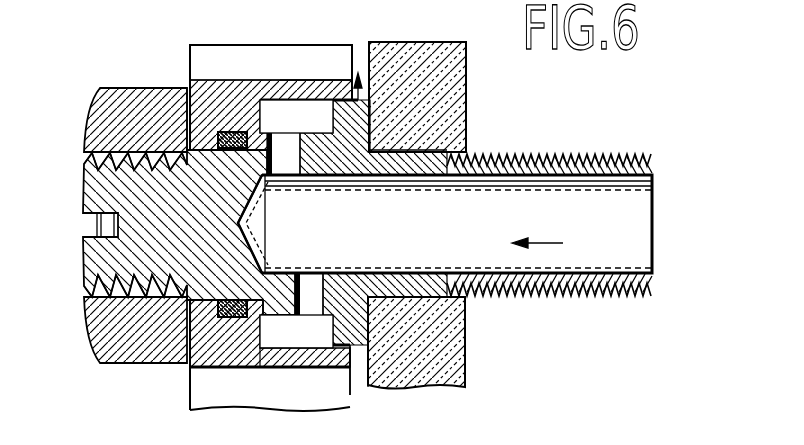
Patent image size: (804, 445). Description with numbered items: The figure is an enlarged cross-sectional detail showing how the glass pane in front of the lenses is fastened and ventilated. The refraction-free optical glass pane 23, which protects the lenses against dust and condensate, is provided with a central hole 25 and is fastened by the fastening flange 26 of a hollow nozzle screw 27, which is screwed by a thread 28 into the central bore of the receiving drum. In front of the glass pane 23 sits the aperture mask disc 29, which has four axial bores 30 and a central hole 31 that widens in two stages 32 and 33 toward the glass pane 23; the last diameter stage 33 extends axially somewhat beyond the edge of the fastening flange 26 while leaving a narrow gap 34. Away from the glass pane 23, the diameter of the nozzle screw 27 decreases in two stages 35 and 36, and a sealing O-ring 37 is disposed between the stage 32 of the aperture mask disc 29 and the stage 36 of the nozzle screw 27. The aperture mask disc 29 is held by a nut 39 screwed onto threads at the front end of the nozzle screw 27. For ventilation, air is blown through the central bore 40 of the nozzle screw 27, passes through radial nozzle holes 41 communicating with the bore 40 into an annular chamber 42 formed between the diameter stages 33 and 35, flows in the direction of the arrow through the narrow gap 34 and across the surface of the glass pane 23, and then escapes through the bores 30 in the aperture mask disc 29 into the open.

The optical glass pane 23 is at (453, 86).
The central hole 25 is at (448, 148).
The fastening flange 26 is at (352, 155).
The hollow nozzle screw 27 is at (83, 193).
The thread 28 is at (541, 156).
The aperture mask disc 29 is at (271, 80).
The axial bores 30 is at (342, 383).
The central hole 31 is at (187, 90).
The first diameter stage 32 is at (248, 130).
The second diameter stage 33 is at (330, 95).
The narrow gap 34 is at (327, 353).
The first diameter stage of nozzle screw 35 is at (316, 95).
The second diameter stage of nozzle screw 36 is at (271, 178).
The sealing O-ring 37 is at (222, 130).
The nut 39 is at (100, 121).
The central bore 40 is at (595, 221).
The radial nozzle holes 41 is at (291, 165).
The chamber 42 is at (338, 101).